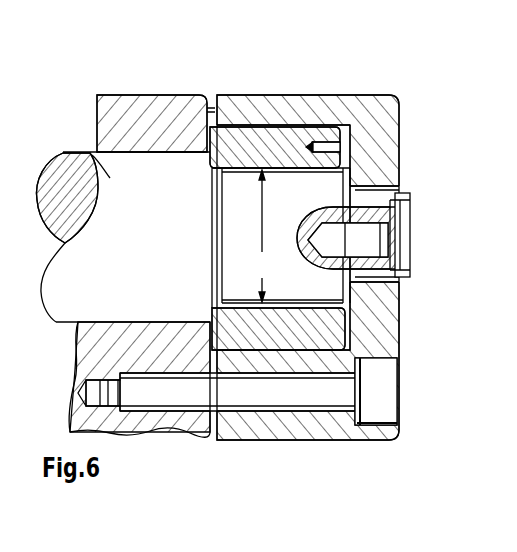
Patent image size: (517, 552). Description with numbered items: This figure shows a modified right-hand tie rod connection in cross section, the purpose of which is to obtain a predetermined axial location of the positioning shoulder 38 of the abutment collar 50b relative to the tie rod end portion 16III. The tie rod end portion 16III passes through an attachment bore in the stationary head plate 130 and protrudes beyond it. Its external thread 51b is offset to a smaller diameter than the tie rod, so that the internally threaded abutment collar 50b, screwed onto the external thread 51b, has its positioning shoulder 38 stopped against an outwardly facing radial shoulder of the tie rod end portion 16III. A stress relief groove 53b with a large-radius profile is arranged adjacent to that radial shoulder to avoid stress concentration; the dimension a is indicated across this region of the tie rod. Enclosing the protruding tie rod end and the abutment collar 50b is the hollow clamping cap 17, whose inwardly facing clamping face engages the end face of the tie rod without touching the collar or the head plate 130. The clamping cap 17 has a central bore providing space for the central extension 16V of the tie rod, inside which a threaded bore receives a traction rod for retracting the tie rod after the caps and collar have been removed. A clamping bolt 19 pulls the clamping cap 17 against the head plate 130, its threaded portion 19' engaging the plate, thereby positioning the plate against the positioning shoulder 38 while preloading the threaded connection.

The tie rod end portion 16III is at (92, 152).
The stationary head plate 130 is at (150, 108).
The abutment collar 50b is at (258, 145).
The clamping cap 17 is at (318, 105).
The central extension 16V is at (392, 205).
The positioning shoulder 38 is at (182, 153).
The stress relief groove 53b is at (214, 216).
The external thread 51b is at (302, 169).
The dimension a is at (261, 236).
The clamping bolt 19 is at (273, 391).
The threaded portion 19' is at (139, 419).